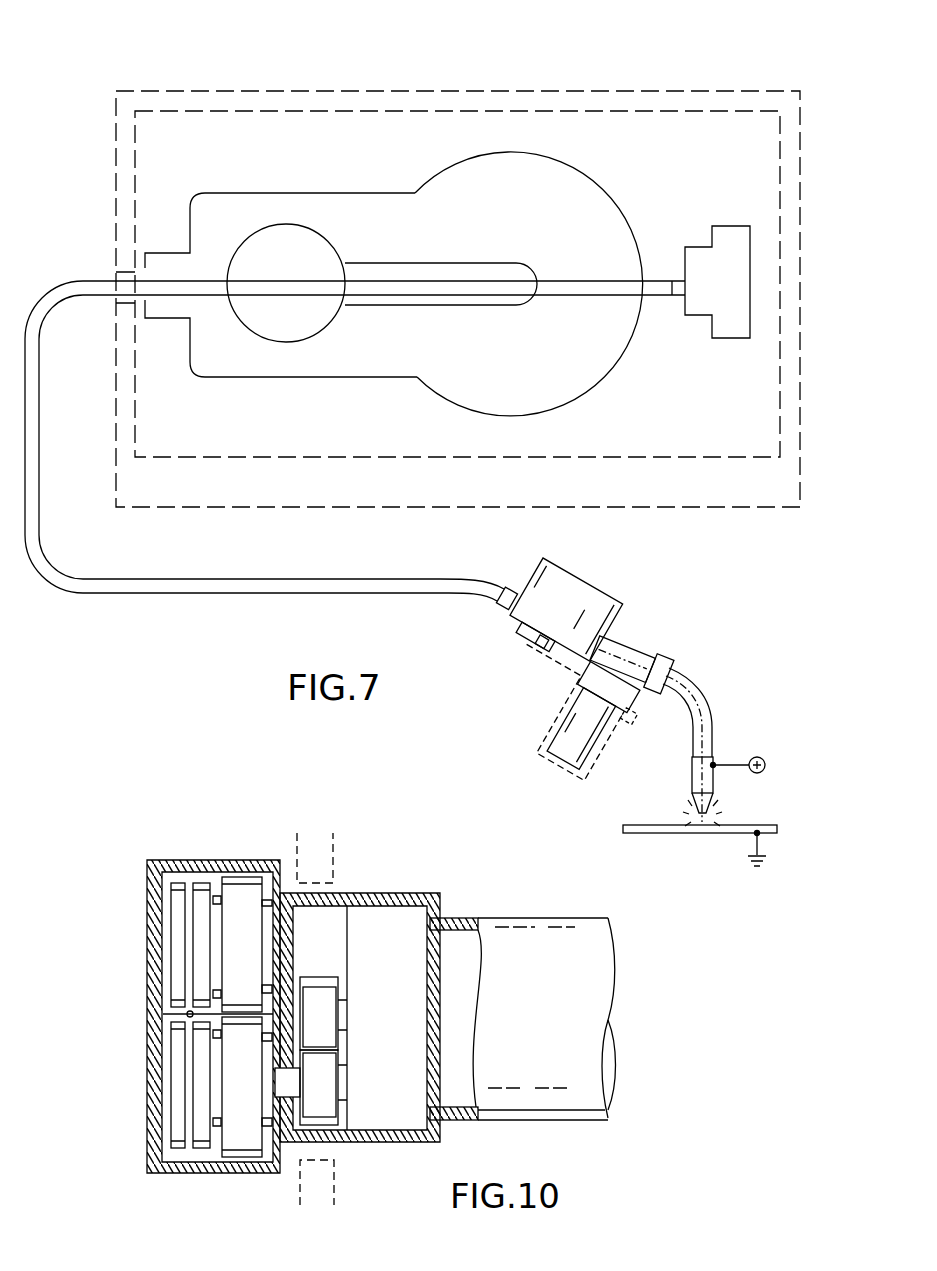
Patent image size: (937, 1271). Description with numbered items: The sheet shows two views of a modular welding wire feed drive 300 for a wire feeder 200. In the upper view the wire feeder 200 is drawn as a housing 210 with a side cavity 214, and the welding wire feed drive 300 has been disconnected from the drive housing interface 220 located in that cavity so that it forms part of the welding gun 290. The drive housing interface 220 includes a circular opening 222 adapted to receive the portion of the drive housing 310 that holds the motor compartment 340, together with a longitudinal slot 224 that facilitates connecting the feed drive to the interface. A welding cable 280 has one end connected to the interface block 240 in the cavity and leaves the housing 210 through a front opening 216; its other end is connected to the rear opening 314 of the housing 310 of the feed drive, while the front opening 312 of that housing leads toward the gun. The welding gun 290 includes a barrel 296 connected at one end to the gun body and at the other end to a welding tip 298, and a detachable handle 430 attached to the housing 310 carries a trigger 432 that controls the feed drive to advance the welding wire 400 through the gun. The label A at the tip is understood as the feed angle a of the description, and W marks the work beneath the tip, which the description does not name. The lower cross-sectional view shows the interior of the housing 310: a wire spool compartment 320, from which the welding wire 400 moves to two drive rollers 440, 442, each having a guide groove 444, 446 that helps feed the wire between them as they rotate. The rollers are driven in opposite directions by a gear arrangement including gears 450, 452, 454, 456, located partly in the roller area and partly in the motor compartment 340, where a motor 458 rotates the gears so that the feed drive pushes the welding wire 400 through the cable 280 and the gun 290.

In FIG. 7, the wire feeder 200 is at (676, 81).
In FIG. 7, the housing 210 is at (398, 90).
In FIG. 7, the side cavity 214 is at (352, 441).
In FIG. 7, the front opening 216 is at (112, 272).
In FIG. 7, the drive housing interface 220 is at (445, 189).
In FIG. 7, the circular opening 222 is at (290, 240).
In FIG. 10, the circular opening 222 is at (342, 1143).
In FIG. 7, the longitudinal slot 224 is at (493, 272).
In FIG. 7, the interface block 240 is at (727, 226).
In FIG. 7, the welding cable 280 is at (355, 583).
In FIG. 7, the welding gun 290 is at (670, 617).
In FIG. 7, the barrel 296 is at (708, 705).
In FIG. 7, the welding tip 298 is at (690, 785).
In FIG. 7, the welding wire feed drive 300 is at (600, 166).
In FIG. 7, the housing 310 is at (597, 598).
In FIG. 7, the front opening 312 is at (677, 650).
In FIG. 7, the rear opening 314 is at (508, 610).
In FIG. 10, the wire spool compartment 320 is at (172, 873).
In FIG. 10, the motor compartment 340 is at (333, 915).
In FIG. 7, the welding wire 400 is at (700, 823).
In FIG. 10, the welding wire 400 is at (183, 1003).
In FIG. 7, the detachable handle 430 is at (560, 708).
In FIG. 7, the trigger 432 is at (634, 722).
In FIG. 10, the drive roller 440 is at (178, 883).
In FIG. 10, the drive roller 442 is at (178, 1103).
In FIG. 10, the guide groove 444 is at (200, 884).
In FIG. 10, the guide groove 446 is at (196, 1148).
In FIG. 10, the gear 450 is at (236, 882).
In FIG. 10, the gear 452 is at (245, 1142).
In FIG. 10, the gear 454 is at (321, 987).
In FIG. 10, the gear 456 is at (332, 1085).
In FIG. 10, the motor 458 is at (458, 945).
In FIG. 7, the feed angle A is at (715, 822).
In FIG. 7, the workpiece W is at (722, 833).